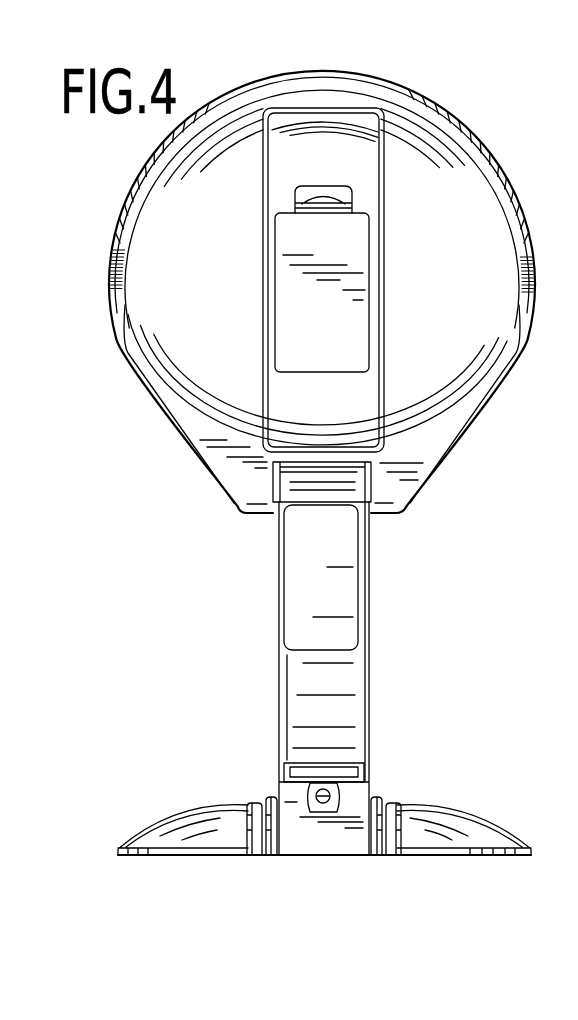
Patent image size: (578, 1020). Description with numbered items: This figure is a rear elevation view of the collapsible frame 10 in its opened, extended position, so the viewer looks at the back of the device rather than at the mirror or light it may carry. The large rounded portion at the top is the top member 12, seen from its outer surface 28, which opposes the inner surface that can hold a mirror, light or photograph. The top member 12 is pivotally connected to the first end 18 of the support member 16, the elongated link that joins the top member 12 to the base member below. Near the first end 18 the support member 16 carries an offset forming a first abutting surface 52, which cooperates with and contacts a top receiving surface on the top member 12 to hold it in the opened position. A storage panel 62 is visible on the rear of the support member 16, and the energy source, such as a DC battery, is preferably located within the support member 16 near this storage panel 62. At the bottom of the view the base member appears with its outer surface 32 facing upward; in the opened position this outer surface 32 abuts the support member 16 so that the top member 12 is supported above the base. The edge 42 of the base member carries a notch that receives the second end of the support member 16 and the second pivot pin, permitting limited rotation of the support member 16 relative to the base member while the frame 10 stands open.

The collapsible frame 10 is at (467, 100).
The top member 12 is at (481, 204).
The outer surface 28 is at (447, 251).
The storage panel 62 is at (333, 343).
The first abutting surface 52 is at (300, 470).
The first end 18 is at (323, 502).
The support member 16 is at (334, 688).
The outer surface 32 is at (189, 813).
The edge 42 is at (530, 848).